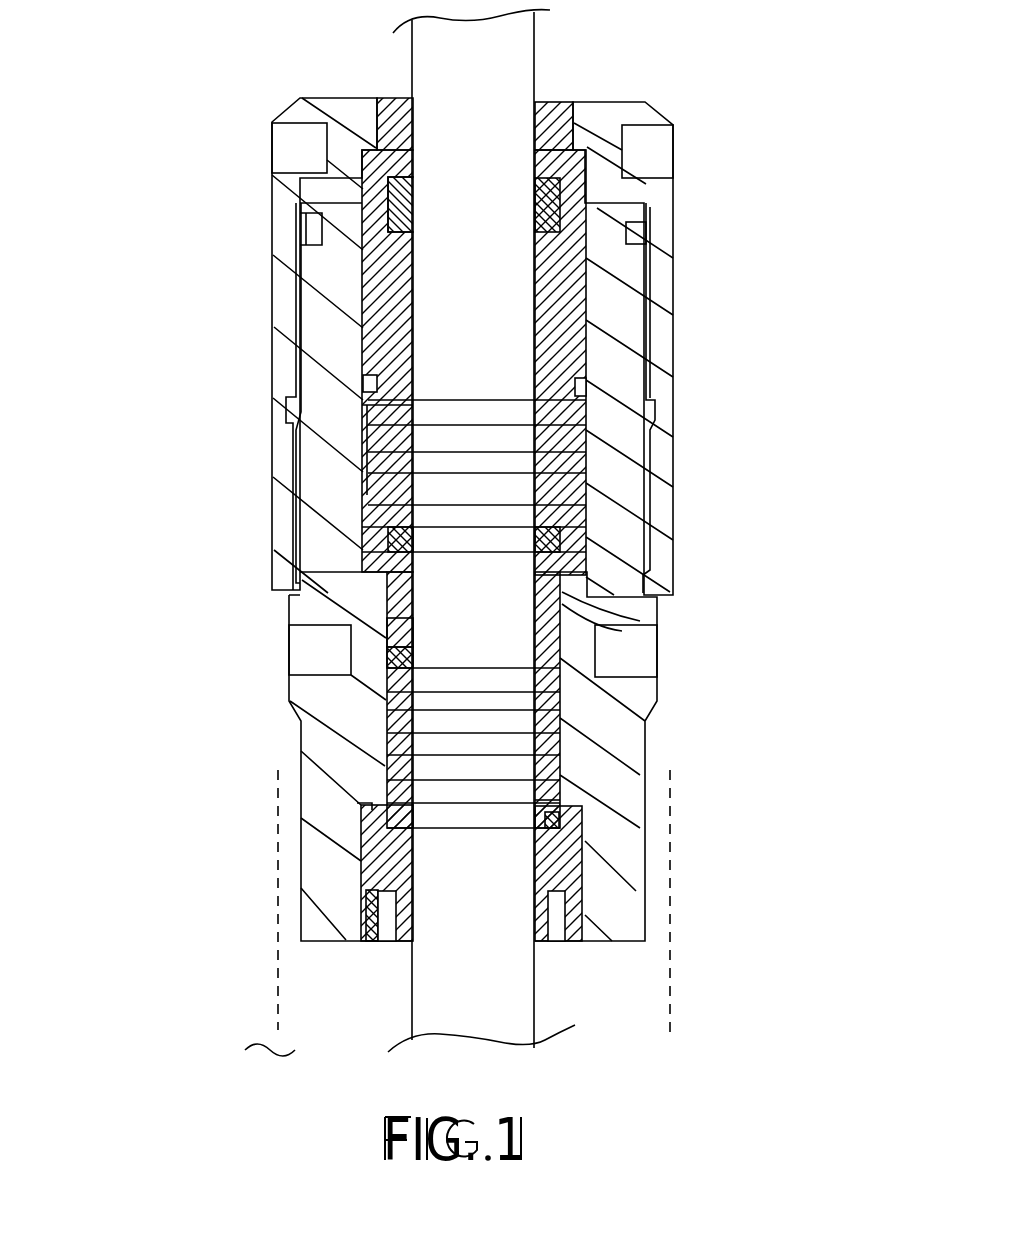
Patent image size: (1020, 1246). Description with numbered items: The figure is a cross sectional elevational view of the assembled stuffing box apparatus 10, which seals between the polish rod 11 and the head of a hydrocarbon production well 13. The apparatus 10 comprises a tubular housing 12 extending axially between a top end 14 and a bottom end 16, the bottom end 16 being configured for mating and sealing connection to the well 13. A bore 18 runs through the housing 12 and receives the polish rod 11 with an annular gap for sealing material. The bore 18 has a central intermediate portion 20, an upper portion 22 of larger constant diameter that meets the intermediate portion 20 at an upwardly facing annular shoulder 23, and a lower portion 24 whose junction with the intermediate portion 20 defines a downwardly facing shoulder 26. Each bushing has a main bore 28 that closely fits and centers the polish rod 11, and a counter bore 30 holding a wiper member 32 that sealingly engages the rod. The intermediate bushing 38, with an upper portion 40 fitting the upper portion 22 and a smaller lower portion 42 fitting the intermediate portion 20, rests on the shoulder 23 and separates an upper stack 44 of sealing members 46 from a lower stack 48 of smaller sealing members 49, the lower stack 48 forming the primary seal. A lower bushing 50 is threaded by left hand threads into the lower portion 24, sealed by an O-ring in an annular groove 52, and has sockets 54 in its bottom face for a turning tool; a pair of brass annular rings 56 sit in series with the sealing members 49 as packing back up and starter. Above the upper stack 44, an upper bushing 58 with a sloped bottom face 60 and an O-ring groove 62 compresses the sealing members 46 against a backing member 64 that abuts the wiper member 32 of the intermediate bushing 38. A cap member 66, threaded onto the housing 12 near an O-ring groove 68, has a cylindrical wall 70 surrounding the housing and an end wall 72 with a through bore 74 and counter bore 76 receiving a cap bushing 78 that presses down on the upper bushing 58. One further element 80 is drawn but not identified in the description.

The stuffing box apparatus 10 is at (130, 113).
The polish rod 11 is at (538, 1000).
The tubular housing 12 is at (337, 725).
The hydrocarbon production well 13 is at (268, 1018).
The top end 14 is at (626, 196).
The bottom end 16 is at (626, 945).
The bore 18 is at (565, 702).
The intermediate portion 20 is at (562, 745).
The upper portion 22 is at (662, 322).
The upwardly facing annular shoulder 23 is at (602, 600).
The lower portion 24 is at (575, 841).
The downwardly facing shoulder 26 is at (562, 778).
The main bore 28 is at (378, 127).
The counter bore 30 is at (365, 178).
The wiper member 32 is at (588, 180).
The intermediate bushing 38 is at (310, 575).
The upper portion 40 is at (652, 560).
The lower portion 42 is at (655, 612).
The upper stack 44 is at (610, 442).
The sealing members 46 is at (572, 472).
The lower stack 48 is at (376, 760).
The sealing members 49 is at (385, 768).
The lower bushing 50 is at (360, 858).
The annular groove 52 is at (358, 809).
The sockets 54 is at (386, 946).
The annular rings 56 is at (350, 637).
The upper bushing 58 is at (596, 294).
The bottom face 60 is at (652, 420).
The annular groove 62 is at (587, 389).
The backing member 64 is at (592, 520).
The cap member 66 is at (633, 88).
The annular groove 68 is at (362, 226).
The cylindrical wall 70 is at (278, 365).
The end wall 72 is at (588, 118).
The through bore 74 is at (376, 115).
The counter bore 76 is at (660, 126).
The cap bushing 78 is at (530, 140).
The ring 80 is at (298, 120).